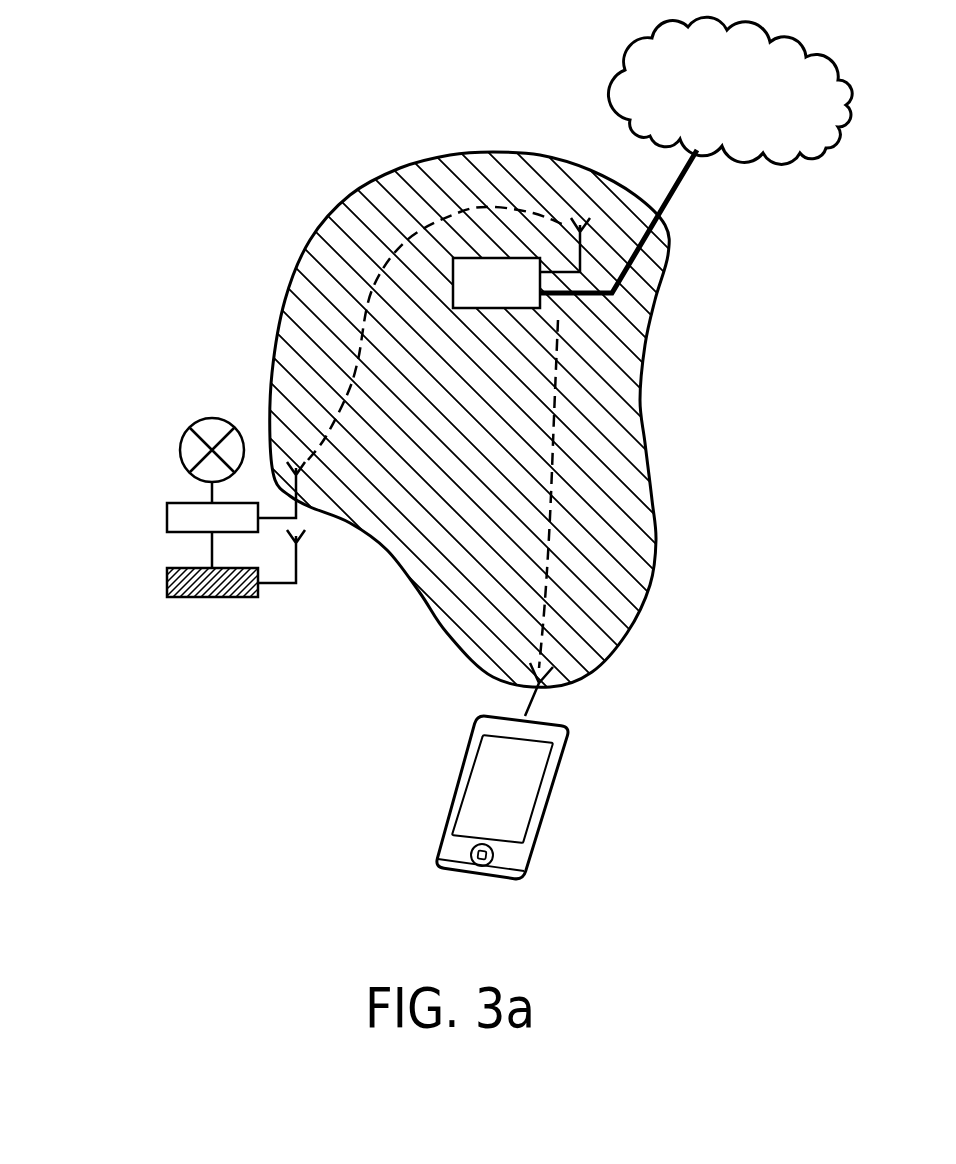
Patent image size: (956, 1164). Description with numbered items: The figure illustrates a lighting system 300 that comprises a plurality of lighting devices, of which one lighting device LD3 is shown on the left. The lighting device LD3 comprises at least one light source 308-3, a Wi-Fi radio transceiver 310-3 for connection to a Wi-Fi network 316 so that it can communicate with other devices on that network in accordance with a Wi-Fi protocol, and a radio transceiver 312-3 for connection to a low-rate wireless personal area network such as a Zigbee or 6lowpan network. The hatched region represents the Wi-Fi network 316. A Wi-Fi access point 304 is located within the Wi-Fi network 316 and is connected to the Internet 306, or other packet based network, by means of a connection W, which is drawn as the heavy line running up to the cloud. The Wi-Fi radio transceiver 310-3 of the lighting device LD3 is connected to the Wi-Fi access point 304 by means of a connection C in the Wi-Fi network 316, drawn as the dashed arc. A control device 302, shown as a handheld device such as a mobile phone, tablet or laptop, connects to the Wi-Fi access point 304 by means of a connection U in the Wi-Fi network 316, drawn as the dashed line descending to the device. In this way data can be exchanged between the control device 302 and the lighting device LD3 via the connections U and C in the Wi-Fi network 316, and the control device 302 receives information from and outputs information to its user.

The lighting system 300 is at (453, 582).
The control device 302 is at (500, 795).
The Wi-Fi access point 304 is at (518, 296).
The Internet 306 is at (747, 103).
The light source 308-3 is at (190, 445).
The Wi-Fi radio transceiver 310-3 is at (175, 517).
The radio transceiver 312-3 is at (175, 583).
The Wi-Fi network 316 is at (645, 443).
The lighting device LD3 is at (180, 472).
The connection C is at (435, 333).
The connection U is at (556, 518).
The connection W is at (629, 221).